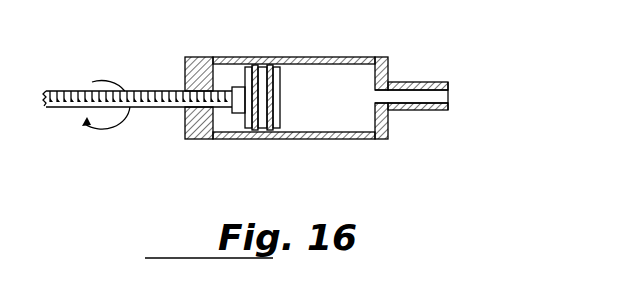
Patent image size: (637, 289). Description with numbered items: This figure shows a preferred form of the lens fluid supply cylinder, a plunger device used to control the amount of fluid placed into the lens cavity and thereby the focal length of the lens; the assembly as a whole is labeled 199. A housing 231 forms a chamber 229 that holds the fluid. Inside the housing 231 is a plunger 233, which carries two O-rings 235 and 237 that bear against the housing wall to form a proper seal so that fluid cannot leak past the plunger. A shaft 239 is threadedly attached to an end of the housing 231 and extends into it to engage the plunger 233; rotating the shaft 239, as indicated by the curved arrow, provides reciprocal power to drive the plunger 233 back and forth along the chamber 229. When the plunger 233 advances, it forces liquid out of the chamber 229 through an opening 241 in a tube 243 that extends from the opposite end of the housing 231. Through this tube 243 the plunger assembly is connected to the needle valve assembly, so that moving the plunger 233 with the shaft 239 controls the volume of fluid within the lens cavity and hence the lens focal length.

The damper assembly 199 is at (401, 36).
The shaft 239 is at (148, 90).
The opening 241 is at (440, 96).
The tube 243 is at (432, 110).
The chamber 229 is at (338, 119).
The housing 231 is at (371, 138).
The O-ring 235 is at (251, 130).
The plunger 233 is at (263, 128).
The O-ring 237 is at (271, 129).